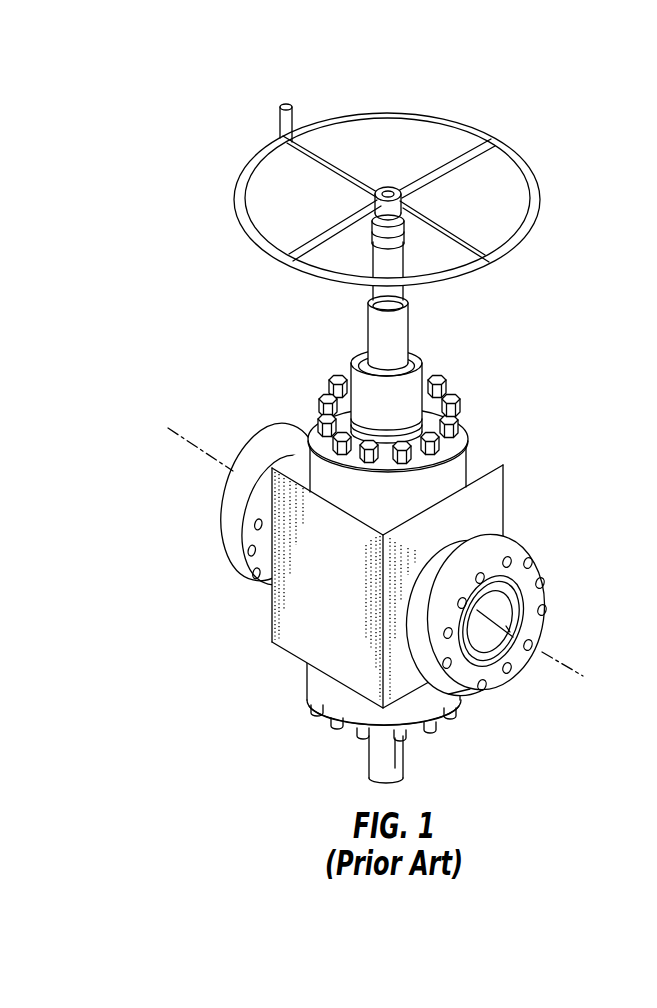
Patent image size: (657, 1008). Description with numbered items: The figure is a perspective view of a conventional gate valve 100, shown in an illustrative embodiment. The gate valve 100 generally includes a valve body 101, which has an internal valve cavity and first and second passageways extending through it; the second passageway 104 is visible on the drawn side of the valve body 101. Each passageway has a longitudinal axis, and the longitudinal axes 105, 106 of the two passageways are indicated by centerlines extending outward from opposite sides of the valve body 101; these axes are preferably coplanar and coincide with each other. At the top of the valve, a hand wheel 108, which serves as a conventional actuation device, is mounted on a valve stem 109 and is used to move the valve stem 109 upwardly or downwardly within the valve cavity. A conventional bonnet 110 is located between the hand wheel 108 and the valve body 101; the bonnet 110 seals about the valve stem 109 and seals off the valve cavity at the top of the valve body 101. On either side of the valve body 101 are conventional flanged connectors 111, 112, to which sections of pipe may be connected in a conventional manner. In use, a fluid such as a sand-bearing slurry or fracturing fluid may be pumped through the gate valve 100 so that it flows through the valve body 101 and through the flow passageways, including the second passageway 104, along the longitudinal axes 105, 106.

The gate valve 100 is at (452, 92).
The valve body 101 is at (490, 505).
The second passageway 104 is at (502, 607).
The longitudinal axis 105 is at (207, 465).
The longitudinal axis 106 is at (567, 651).
The hand wheel 108 is at (513, 150).
The valve stem 109 is at (402, 292).
The bonnet 110 is at (458, 460).
The flanged connector 111 is at (228, 547).
The flanged connector 112 is at (543, 570).